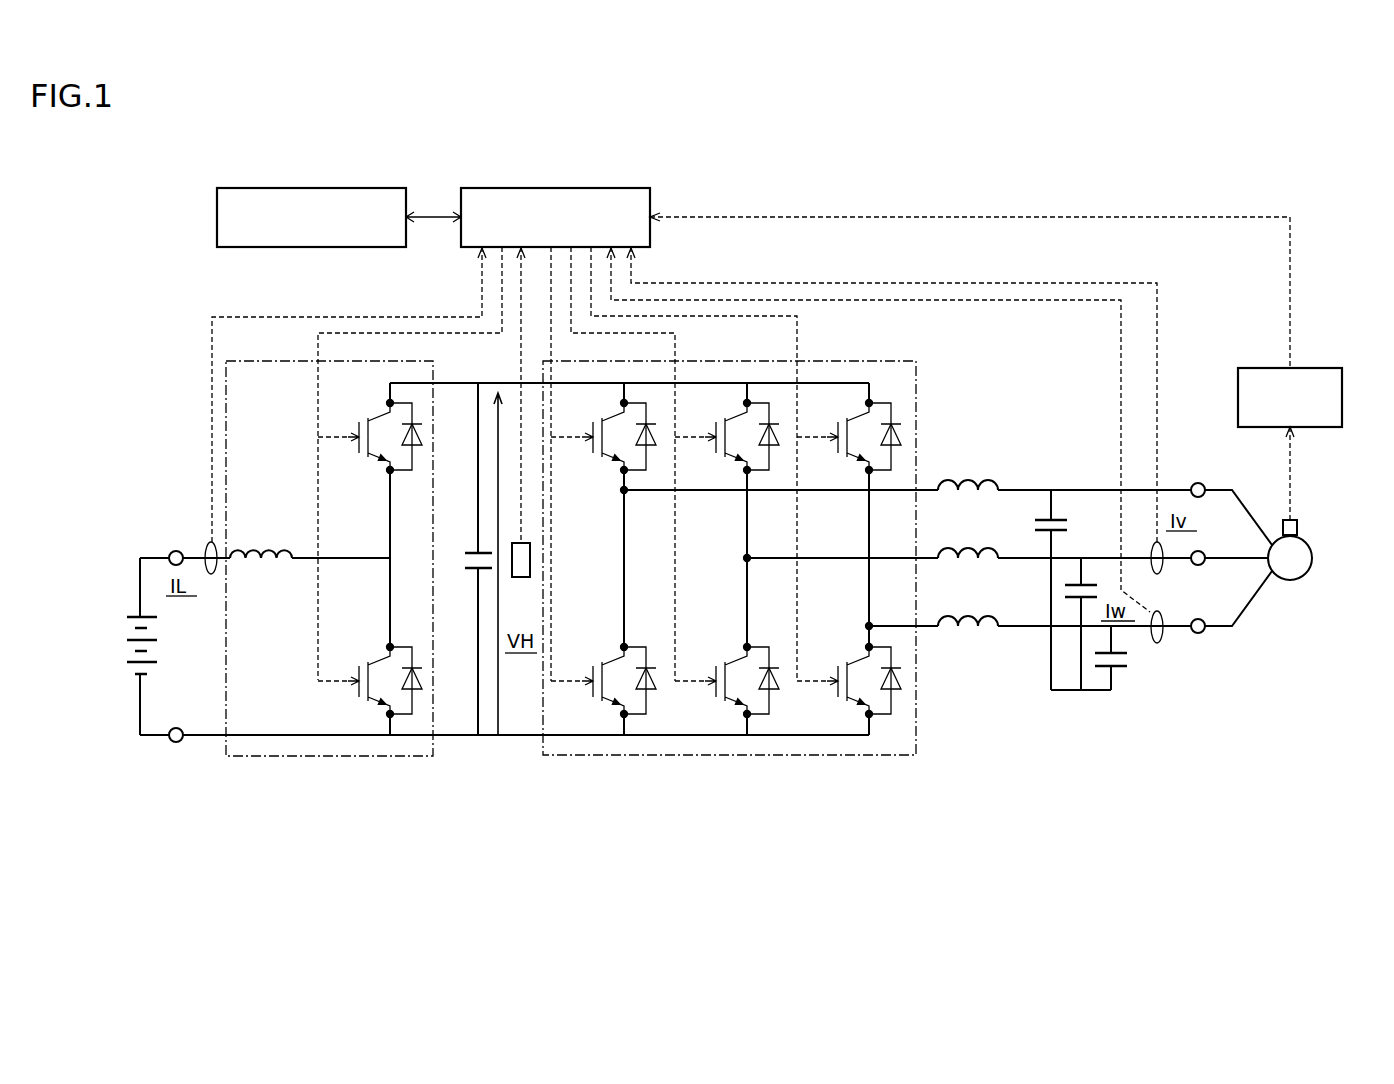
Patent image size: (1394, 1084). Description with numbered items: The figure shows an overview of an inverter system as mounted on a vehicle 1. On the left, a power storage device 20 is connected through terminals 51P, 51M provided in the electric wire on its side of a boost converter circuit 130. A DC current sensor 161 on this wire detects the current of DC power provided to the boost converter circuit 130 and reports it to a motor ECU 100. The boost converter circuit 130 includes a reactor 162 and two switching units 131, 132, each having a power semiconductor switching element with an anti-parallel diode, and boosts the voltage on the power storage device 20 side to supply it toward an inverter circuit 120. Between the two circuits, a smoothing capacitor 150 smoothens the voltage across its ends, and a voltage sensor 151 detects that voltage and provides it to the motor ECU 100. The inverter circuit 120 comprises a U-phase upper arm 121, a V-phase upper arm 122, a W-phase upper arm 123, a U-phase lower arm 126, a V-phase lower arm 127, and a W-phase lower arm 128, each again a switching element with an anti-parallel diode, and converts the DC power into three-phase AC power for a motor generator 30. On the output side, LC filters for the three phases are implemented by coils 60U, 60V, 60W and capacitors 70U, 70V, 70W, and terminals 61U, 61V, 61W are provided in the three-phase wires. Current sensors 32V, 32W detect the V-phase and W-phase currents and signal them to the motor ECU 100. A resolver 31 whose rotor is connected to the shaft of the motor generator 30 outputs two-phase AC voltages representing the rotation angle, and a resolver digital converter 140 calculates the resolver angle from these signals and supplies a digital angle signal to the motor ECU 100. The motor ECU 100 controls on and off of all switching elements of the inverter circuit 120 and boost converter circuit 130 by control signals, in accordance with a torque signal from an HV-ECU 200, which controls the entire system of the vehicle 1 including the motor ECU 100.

The vehicle 1 is at (93, 160).
The power storage device 20 is at (125, 645).
The motor generator 30 is at (1313, 558).
The resolver 31 is at (1298, 527).
The current sensor 32V is at (1163, 567).
The current sensor 32W is at (1158, 643).
The terminal 51P is at (176, 551).
The terminal 51M is at (176, 742).
The coil 60U is at (963, 478).
The coil 60V is at (963, 546).
The coil 60W is at (963, 614).
The terminal 61U is at (1205, 487).
The terminal 61V is at (1205, 554).
The terminal 61W is at (1205, 633).
The capacitor 70U is at (1060, 517).
The capacitor 70V is at (1085, 583).
The capacitor 70W is at (1113, 668).
The motor ECU 100 is at (590, 188).
The inverter circuit 120 is at (870, 757).
The U-phase upper arm 121 is at (628, 476).
The V-phase upper arm 122 is at (751, 476).
The W-phase upper arm 123 is at (873, 476).
The U-phase lower arm 126 is at (628, 643).
The V-phase lower arm 127 is at (751, 643).
The W-phase lower arm 128 is at (873, 643).
The boost converter circuit 130 is at (390, 757).
The switching unit 131 is at (394, 476).
The switching unit 132 is at (394, 643).
The resolver digital converter 140 is at (1318, 368).
The smoothing capacitor 150 is at (476, 572).
The voltage sensor 151 is at (521, 578).
The DC current sensor 161 is at (212, 576).
The reactor 162 is at (270, 575).
The HV-ECU 200 is at (345, 188).